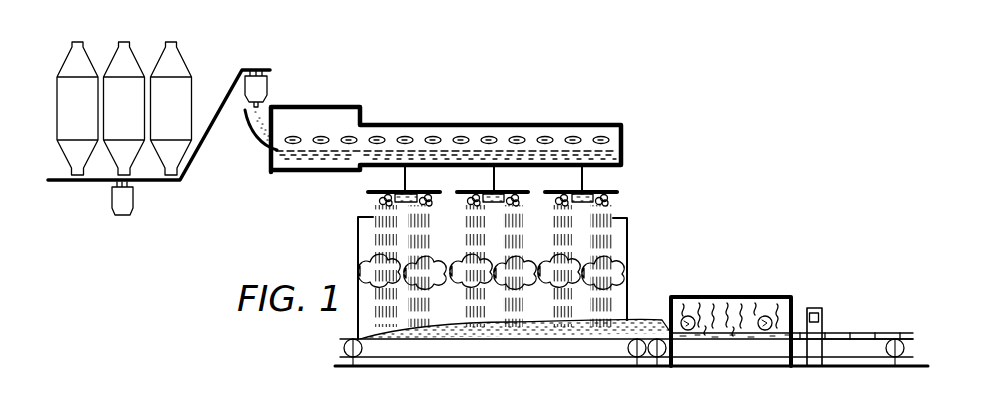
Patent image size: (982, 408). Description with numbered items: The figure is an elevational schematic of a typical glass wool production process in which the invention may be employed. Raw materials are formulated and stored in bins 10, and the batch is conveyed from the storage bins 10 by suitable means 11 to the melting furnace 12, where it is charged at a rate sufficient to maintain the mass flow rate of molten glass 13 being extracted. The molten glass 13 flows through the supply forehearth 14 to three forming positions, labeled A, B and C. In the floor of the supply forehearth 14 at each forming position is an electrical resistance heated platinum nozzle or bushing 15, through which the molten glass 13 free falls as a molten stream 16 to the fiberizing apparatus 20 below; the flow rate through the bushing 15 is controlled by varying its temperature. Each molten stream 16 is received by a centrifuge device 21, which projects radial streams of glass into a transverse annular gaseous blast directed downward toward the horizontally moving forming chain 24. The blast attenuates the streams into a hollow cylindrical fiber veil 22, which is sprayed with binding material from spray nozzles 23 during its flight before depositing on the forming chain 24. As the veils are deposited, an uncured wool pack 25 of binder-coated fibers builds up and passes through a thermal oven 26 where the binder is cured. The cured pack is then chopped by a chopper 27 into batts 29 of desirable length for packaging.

The storage bins 10 is at (198, 40).
The conveying means 11 is at (216, 94).
The melting furnace 12 is at (291, 172).
The molten glass 13 is at (383, 156).
The supply forehearth 14 is at (576, 123).
The bushing 15 is at (586, 171).
The molten stream 16 is at (584, 181).
The fiberizing apparatus 20 is at (370, 192).
The centrifuge device 21 is at (403, 199).
The fiber veil 22 is at (443, 243).
The spray nozzles 23 is at (628, 254).
The forming chain 24 is at (442, 340).
The wool pack 25 is at (640, 318).
The thermal oven 26 is at (748, 295).
The chopper 27 is at (822, 308).
The batts 29 is at (858, 333).